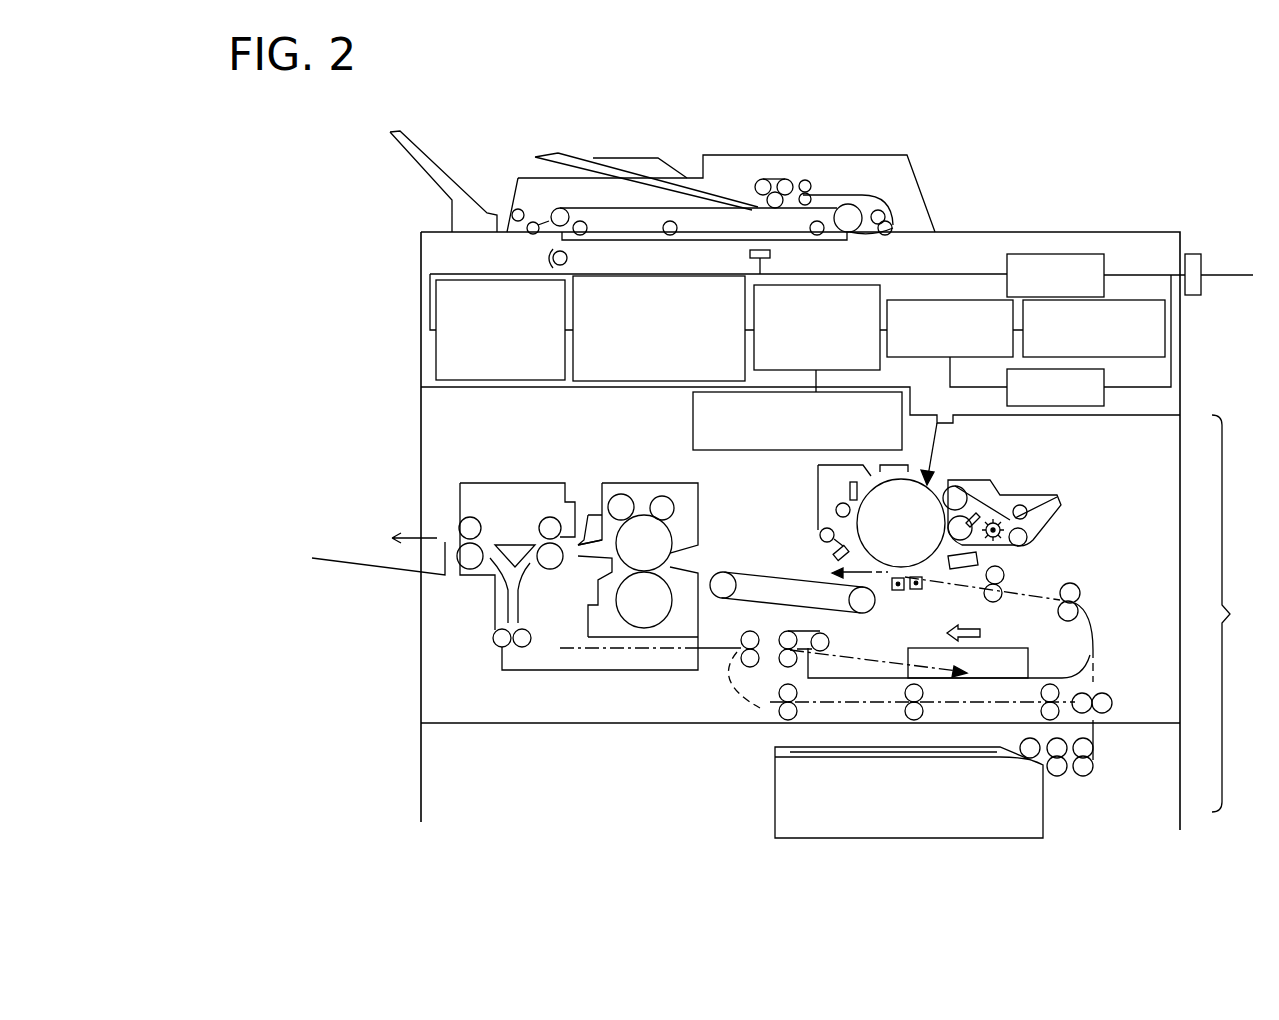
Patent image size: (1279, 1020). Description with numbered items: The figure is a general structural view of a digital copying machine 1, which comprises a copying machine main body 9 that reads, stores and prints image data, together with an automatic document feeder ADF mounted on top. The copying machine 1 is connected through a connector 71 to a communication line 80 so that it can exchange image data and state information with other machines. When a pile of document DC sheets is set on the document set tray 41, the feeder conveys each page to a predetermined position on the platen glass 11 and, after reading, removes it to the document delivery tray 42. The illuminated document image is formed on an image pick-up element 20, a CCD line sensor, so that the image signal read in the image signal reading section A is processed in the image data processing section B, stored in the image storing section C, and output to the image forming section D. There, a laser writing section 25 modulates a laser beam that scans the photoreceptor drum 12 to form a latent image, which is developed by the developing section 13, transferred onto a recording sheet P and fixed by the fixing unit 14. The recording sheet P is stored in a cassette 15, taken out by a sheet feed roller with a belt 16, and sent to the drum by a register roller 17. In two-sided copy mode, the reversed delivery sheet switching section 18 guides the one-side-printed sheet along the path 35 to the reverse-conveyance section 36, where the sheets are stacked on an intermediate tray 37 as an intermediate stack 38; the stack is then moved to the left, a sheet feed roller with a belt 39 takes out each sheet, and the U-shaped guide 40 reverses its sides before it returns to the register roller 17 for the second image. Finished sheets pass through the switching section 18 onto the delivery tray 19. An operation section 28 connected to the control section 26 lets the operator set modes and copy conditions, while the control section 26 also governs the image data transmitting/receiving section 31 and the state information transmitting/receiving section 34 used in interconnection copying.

The copying machine 1 is at (385, 331).
The copying machine main body 9 is at (998, 232).
The platen glass 11 is at (858, 241).
The photoreceptor drum 12 is at (942, 482).
The developing section 13 is at (1029, 494).
The fixing unit 14 is at (641, 483).
The cassette 15 is at (775, 806).
The sheet feed roller with a belt 16 is at (1063, 770).
The register roller 17 is at (1005, 575).
The reversed delivery sheet switching section 18 is at (524, 483).
The delivery tray 19 is at (343, 557).
The image pick-up element 20 is at (773, 253).
The laser writing section 25 is at (762, 452).
The control section 26 is at (967, 300).
The operation section 28 is at (1165, 323).
The image data transmitting/receiving section 31 is at (1057, 252).
The state information transmitting/receiving section 34 is at (1105, 395).
The path 35 is at (587, 651).
The reverse-conveyance section 36 is at (521, 672).
The intermediate tray 37 is at (877, 661).
The intermediate stack 38 is at (1016, 648).
The sheet feed roller with a belt 39 is at (781, 636).
The U-shaped guide 40 is at (728, 697).
The document set tray 41 is at (543, 153).
The document delivery tray 42 is at (443, 168).
The connector 71 is at (1197, 254).
The communication line 80 is at (1237, 274).
The image signal reading section A is at (472, 383).
The image data processing section B is at (590, 383).
The image storing section C is at (788, 285).
The image forming section D is at (1235, 613).
The recording sheet P is at (790, 747).
The document DC is at (590, 158).
The automatic document feeder ADF is at (895, 153).